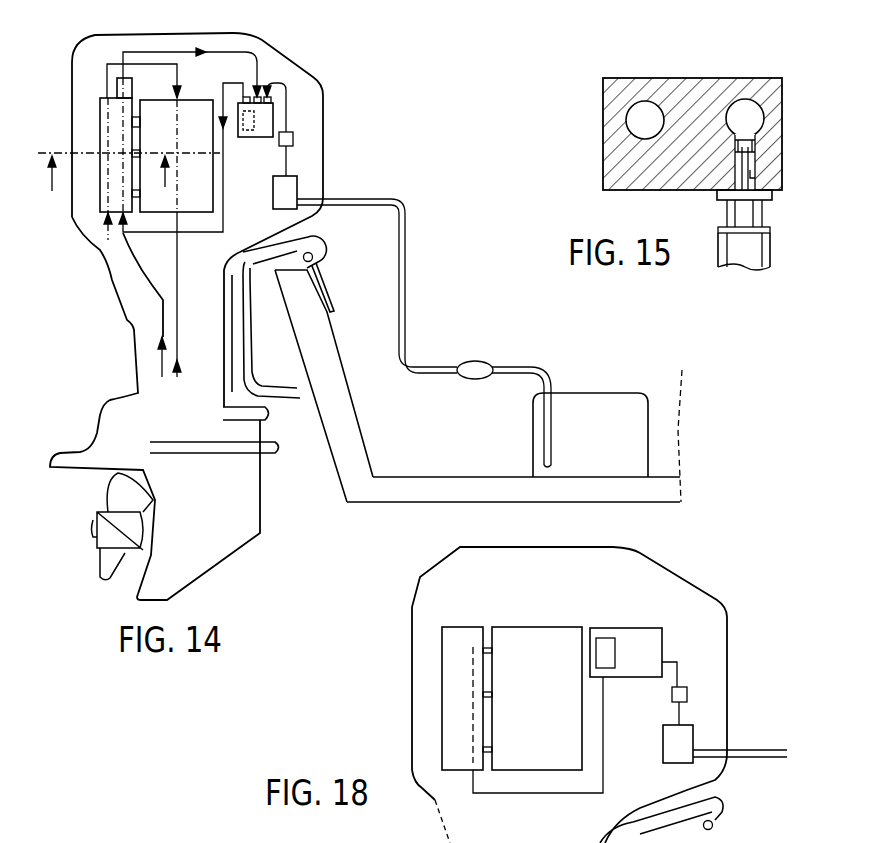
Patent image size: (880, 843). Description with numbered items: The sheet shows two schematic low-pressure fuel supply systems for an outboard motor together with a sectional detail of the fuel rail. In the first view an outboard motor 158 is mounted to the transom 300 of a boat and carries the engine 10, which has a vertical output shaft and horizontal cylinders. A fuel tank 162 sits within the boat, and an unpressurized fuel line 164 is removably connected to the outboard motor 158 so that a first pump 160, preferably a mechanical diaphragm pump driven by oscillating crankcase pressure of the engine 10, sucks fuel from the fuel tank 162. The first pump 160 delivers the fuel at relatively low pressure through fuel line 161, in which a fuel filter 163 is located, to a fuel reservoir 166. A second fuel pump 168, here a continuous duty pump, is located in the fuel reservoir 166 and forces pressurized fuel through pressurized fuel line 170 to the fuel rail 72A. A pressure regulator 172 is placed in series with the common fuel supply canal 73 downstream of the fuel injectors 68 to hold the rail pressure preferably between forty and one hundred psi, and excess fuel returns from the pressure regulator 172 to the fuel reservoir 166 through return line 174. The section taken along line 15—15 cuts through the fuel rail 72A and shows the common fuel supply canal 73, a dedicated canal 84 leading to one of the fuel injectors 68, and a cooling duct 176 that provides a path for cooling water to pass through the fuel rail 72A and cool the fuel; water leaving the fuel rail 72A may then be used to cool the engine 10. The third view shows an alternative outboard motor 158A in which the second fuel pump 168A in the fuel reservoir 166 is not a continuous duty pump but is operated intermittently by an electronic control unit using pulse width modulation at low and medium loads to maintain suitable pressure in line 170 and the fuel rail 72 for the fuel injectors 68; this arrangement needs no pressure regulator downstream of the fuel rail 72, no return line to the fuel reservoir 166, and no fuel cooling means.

In FIG. 14, the engine 10 is at (193, 100).
In FIG. 18, the engine 10 is at (537, 640).
In FIG. 14, the section line 15— 15 is at (129, 158).
In FIG. 15, the fuel injectors 68 is at (767, 217).
In FIG. 18, the fuel rail 72 is at (453, 645).
In FIG. 14, the fuel rail 72A is at (100, 122).
In FIG. 15, the fuel rail 72A is at (711, 78).
In FIG. 14, the common fuel supply canal 73 is at (110, 187).
In FIG. 15, the common fuel supply canal 73 is at (752, 123).
In FIG. 15, the dedicated canals 84 is at (753, 173).
In FIG. 14, the outboard motor 158 is at (310, 68).
In FIG. 18, the outboard motor 158A is at (698, 587).
In FIG. 14, the first pump 160 is at (287, 192).
In FIG. 18, the first pump 160 is at (680, 740).
In FIG. 14, the fuel line 161 is at (287, 110).
In FIG. 18, the fuel line 161 is at (678, 668).
In FIG. 14, the fuel tank 162 is at (590, 410).
In FIG. 14, the fuel filter 163 is at (294, 139).
In FIG. 18, the fuel filter 163 is at (688, 693).
In FIG. 14, the unpressurized fuel line 164 is at (408, 354).
In FIG. 18, the unpressurized fuel line 164 is at (747, 750).
In FIG. 14, the fuel reservoir 166 is at (267, 142).
In FIG. 18, the fuel reservoir 166 is at (633, 670).
In FIG. 14, the second fuel pump 168 is at (247, 138).
In FIG. 18, the second fuel pump 168A is at (602, 652).
In FIG. 14, the pressurized fuel line 170 is at (193, 161).
In FIG. 18, the pressurized fuel line 170 is at (532, 797).
In FIG. 14, the pressure regulator 172 is at (117, 77).
In FIG. 14, the return line 174 is at (187, 50).
In FIG. 14, the cooling duct 176 is at (103, 145).
In FIG. 15, the cooling duct 176 is at (642, 112).
In FIG. 14, the transom 300 is at (327, 362).